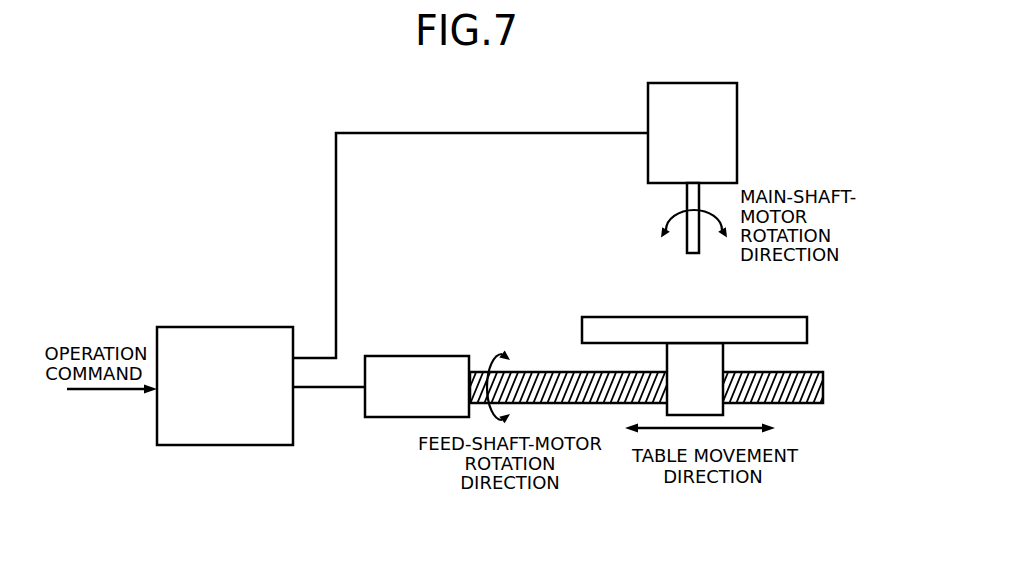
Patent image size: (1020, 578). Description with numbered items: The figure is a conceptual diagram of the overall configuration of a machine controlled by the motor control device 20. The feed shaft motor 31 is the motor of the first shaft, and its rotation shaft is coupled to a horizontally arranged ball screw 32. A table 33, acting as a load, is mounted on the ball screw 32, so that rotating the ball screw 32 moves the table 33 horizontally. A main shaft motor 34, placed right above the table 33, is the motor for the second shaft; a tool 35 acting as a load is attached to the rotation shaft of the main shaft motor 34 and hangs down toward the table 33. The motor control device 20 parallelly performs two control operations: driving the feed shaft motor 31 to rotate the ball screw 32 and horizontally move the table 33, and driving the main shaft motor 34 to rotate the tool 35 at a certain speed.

The motor control device 20 is at (257, 327).
The feed shaft motor 31 is at (404, 356).
The ball screw 32 is at (538, 372).
The table 33 is at (760, 317).
The main shaft motor 34 is at (702, 83).
The tool 35 is at (687, 201).